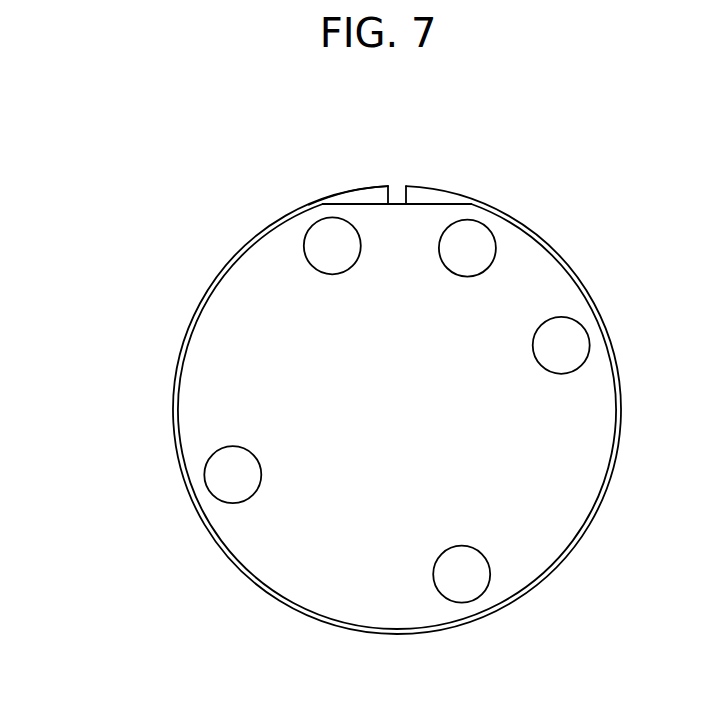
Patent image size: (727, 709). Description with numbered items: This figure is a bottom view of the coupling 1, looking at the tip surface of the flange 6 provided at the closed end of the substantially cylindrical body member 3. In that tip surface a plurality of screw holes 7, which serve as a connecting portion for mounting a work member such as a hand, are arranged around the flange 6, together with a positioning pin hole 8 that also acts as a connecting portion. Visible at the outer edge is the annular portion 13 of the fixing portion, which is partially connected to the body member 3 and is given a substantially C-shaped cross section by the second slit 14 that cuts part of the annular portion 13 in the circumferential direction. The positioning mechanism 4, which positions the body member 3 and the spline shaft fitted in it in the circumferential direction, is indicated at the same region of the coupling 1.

The coupling 1 is at (122, 205).
The body member 3 is at (240, 312).
The positioning mechanism 4 is at (345, 192).
The flange 6 is at (176, 368).
The screw holes 7 is at (316, 229).
The positioning pin hole 8 is at (473, 221).
The annular portion 13 is at (362, 187).
The second slit 14 is at (397, 188).